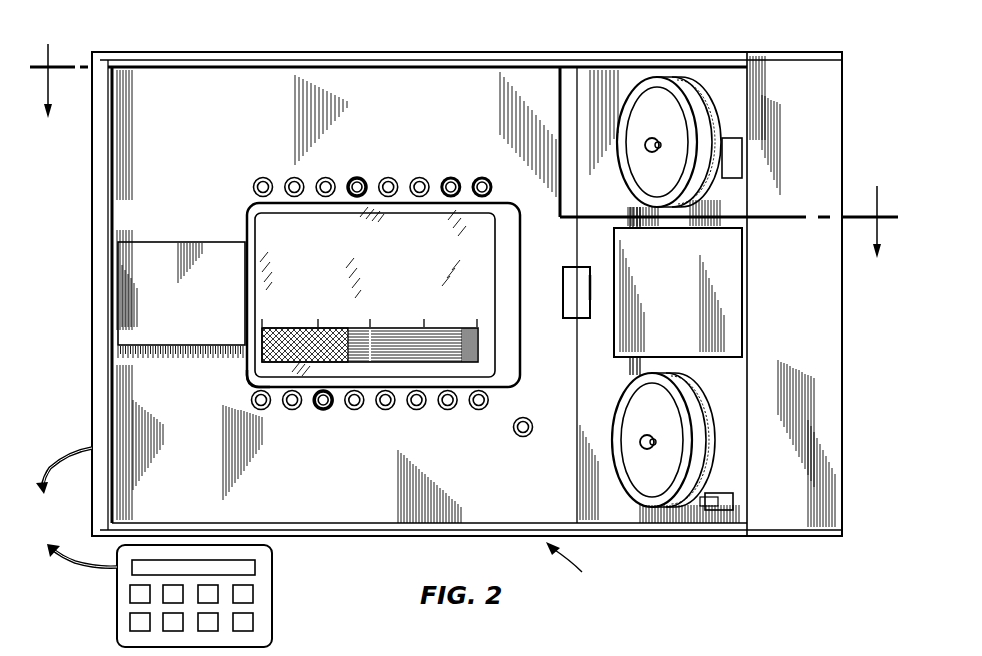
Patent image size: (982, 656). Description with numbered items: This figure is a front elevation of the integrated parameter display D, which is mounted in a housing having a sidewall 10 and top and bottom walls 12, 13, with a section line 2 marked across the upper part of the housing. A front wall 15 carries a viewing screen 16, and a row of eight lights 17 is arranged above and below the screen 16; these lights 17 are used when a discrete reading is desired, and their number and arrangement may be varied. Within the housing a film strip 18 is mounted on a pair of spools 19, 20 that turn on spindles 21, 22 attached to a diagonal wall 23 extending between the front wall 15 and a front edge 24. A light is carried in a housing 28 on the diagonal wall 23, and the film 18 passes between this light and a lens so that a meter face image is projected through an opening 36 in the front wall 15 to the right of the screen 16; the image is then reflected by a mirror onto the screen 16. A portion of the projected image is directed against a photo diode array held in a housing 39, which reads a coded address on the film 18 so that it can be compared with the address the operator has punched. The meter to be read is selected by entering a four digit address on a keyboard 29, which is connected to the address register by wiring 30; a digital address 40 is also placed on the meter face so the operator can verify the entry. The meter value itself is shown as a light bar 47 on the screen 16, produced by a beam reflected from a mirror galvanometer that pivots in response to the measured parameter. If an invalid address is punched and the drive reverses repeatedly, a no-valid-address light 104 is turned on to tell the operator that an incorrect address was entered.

The section line 2 is at (464, 140).
The sidewall 10 is at (92, 325).
The top wall 12 is at (556, 52).
The bottom wall 13 is at (381, 537).
The front wall 15 is at (137, 383).
The viewing screen 16 is at (258, 381).
The lights 17 is at (334, 179).
The film strip 18 is at (631, 380).
The spool 19 is at (628, 164).
The spool 20 is at (587, 295).
The spindle 21 is at (659, 143).
The spindle 22 is at (654, 437).
The diagonal wall 23 is at (728, 460).
The front edge 24 is at (805, 537).
The housing 28 is at (730, 292).
The keyboard 29 is at (272, 607).
The wiring 30 is at (56, 556).
The opening 36 is at (566, 300).
The housing 39 is at (148, 243).
The digital address 40 is at (256, 222).
The light bar 47 is at (372, 337).
The no-valid-address light 104 is at (525, 437).
The integrated parameter display D is at (570, 561).